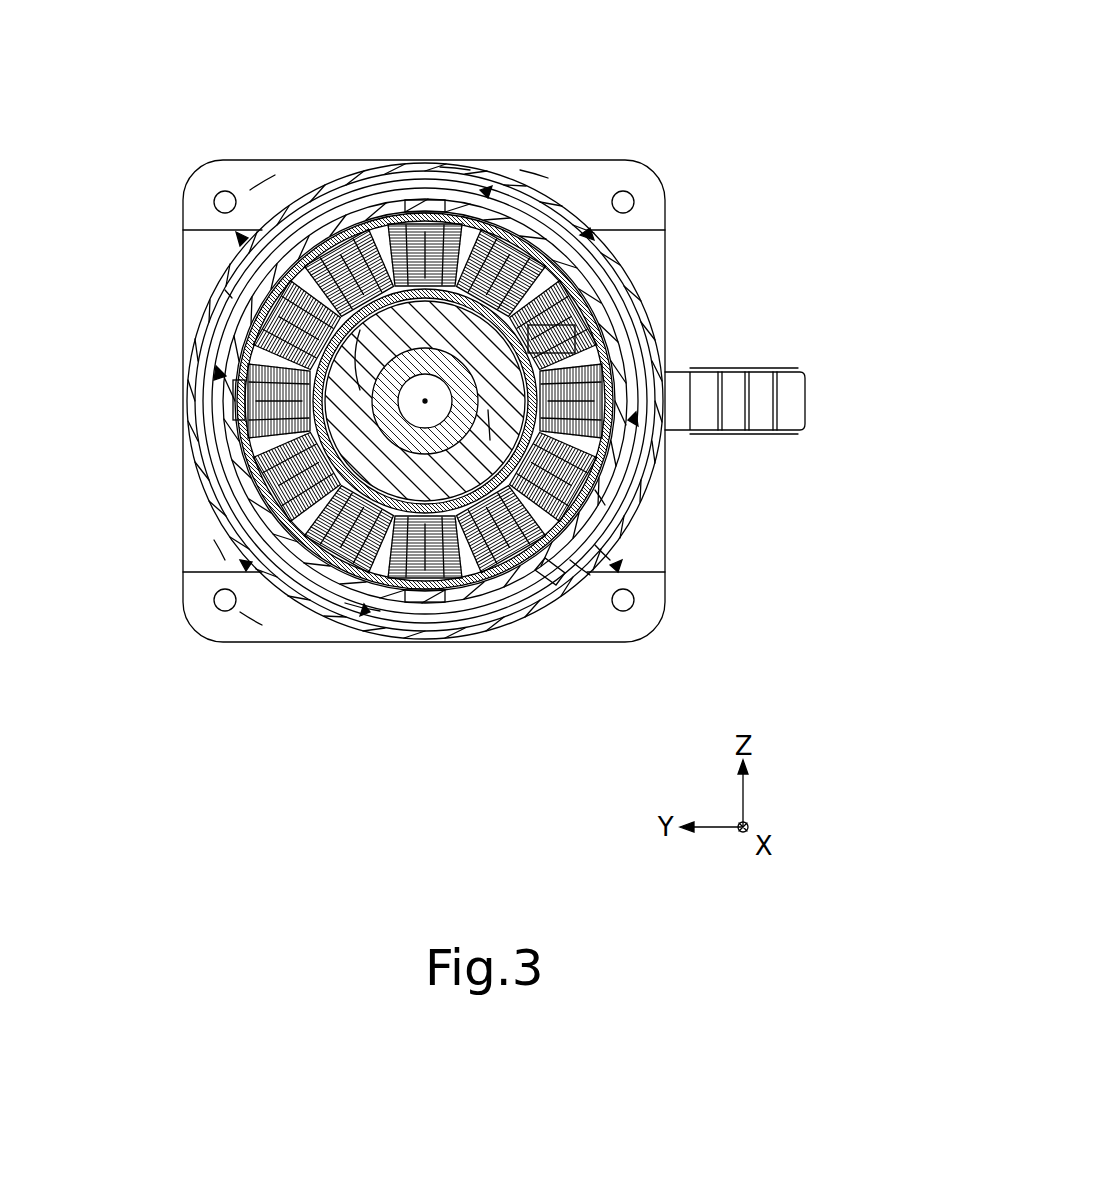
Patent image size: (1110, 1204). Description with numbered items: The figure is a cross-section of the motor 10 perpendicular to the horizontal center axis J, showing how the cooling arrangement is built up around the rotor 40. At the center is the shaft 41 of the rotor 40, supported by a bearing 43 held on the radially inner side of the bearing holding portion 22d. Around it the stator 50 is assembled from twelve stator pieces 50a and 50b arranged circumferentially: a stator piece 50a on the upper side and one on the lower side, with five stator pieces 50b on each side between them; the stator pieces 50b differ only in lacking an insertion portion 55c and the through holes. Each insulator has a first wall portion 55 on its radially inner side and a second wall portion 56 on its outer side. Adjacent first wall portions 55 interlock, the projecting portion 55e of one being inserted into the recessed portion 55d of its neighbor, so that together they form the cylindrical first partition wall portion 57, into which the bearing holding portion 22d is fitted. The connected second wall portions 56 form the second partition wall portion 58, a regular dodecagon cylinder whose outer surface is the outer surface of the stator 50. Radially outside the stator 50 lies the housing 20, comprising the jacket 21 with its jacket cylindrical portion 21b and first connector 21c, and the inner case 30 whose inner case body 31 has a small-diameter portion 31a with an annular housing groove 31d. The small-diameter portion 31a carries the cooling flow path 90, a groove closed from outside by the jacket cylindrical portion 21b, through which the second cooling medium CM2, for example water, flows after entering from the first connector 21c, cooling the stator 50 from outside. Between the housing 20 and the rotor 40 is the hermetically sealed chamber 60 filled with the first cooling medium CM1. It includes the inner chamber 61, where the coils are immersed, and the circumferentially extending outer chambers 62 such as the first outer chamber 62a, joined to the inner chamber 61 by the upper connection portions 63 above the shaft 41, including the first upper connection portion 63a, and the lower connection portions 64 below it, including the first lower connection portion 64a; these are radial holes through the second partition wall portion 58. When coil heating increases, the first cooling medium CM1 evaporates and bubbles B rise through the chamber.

The motor 10 is at (713, 86).
The housing 20 is at (670, 625).
The jacket 21 is at (609, 161).
The jacket cylindrical portion 21b is at (455, 167).
The first connector 21c is at (785, 378).
The bearing holding portion 22d is at (362, 607).
The inner case 30 is at (485, 366).
The inner case body 31 is at (640, 170).
The small-diameter portion 31a is at (535, 166).
The housing groove 31d is at (255, 620).
The rotor 40 is at (500, 391).
The shaft 41 is at (312, 598).
The bearing 43 is at (215, 522).
The stator 50 is at (482, 378).
The stator piece 50a is at (490, 186).
The stator piece 50b is at (620, 234).
The first wall portion 55 is at (550, 410).
The insertion portion 55c is at (433, 398).
The recessed portion 55d is at (425, 346).
The projecting portion 55e is at (502, 410).
The second wall portion 56 is at (305, 205).
The first partition wall portion 57 is at (258, 265).
The second partition wall portion 58 is at (257, 192).
The sealed chamber 60 is at (587, 572).
The inner chamber 61 is at (612, 542).
The outer chamber 62 is at (562, 631).
The first outer chamber 62a is at (550, 586).
The upper connection portion 63 is at (432, 133).
The first upper connection portion 63a is at (416, 200).
The lower connection portion 64 is at (405, 659).
The first lower connection portion 64a is at (408, 603).
The cooling flow path 90 is at (350, 185).
The center axis J is at (602, 500).
The bubbles B is at (240, 362).
The first cooling medium CM1 is at (551, 338).
The second cooling medium CM2 is at (232, 297).